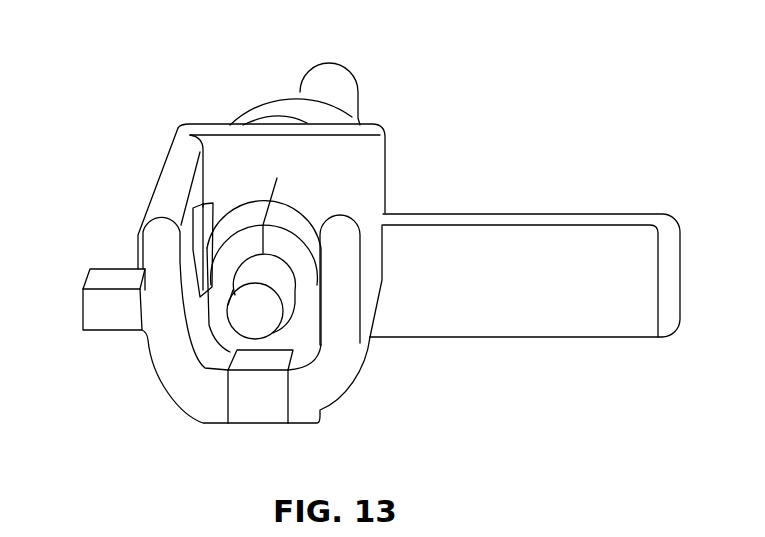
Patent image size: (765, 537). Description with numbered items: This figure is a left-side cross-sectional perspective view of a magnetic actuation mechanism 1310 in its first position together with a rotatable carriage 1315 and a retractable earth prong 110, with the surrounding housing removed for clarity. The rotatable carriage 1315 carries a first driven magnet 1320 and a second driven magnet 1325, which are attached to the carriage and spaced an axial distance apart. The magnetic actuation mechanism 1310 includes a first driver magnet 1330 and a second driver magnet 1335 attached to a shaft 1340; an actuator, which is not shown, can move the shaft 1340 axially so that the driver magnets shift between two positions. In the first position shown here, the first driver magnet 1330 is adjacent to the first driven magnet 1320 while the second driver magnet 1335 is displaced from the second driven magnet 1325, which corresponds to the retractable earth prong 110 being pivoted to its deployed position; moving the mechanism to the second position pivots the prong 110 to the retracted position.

The magnetic actuation mechanism 1310 is at (248, 81).
The rotatable carriage 1315 is at (368, 165).
The first driven magnet 1320 is at (197, 253).
The second driven magnet 1325 is at (243, 395).
The first driver magnet 1330 is at (240, 213).
The second driver magnet 1335 is at (297, 203).
The shaft 1340 is at (345, 93).
The retractable earth prong 110 is at (598, 259).